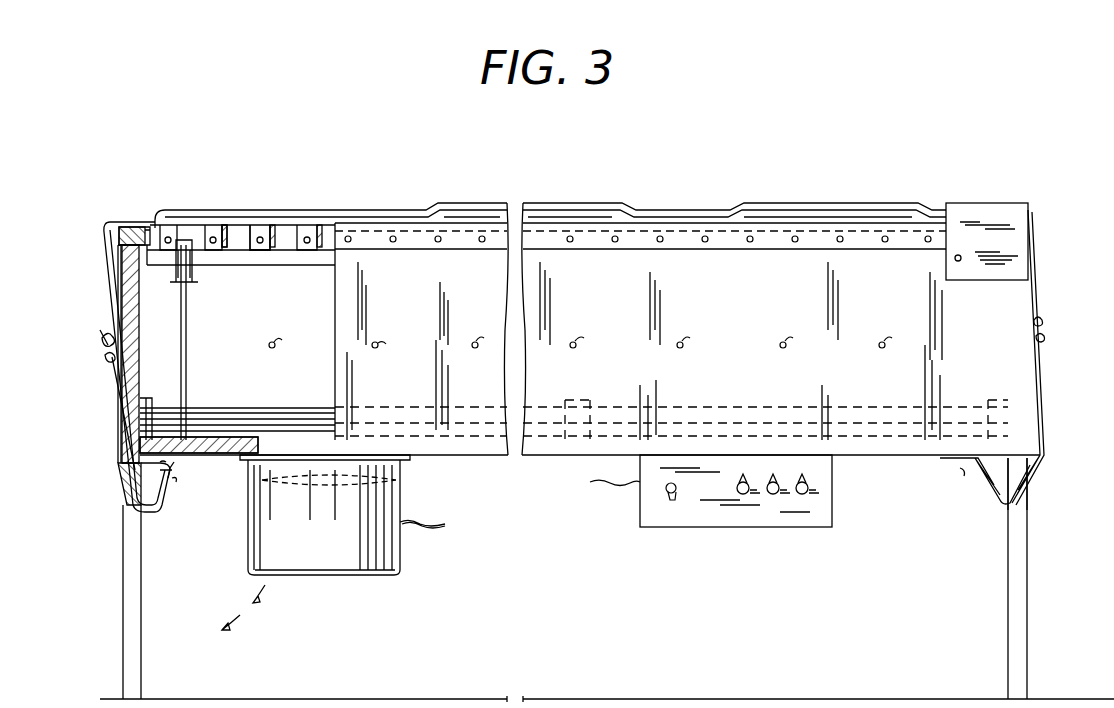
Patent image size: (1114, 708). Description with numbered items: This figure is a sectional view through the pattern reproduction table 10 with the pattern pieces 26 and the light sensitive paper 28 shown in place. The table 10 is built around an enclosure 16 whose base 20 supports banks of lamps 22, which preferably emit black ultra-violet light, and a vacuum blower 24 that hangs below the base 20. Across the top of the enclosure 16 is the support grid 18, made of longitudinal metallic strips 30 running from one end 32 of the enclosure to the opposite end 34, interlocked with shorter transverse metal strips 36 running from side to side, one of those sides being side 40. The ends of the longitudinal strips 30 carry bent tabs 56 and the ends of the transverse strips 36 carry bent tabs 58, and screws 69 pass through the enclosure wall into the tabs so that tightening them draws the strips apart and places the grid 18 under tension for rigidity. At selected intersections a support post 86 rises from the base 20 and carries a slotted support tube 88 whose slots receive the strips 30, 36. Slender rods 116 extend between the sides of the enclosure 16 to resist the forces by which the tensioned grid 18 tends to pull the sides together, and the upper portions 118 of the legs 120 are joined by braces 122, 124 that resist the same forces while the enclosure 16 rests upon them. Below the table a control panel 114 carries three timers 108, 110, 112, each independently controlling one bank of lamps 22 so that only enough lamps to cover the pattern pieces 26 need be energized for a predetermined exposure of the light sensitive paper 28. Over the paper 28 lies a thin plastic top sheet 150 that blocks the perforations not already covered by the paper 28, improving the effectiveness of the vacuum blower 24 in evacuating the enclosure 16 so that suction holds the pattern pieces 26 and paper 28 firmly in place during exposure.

The pattern reproduction table 10 is at (1048, 206).
The enclosure 16 is at (866, 459).
The support grid 18 is at (234, 252).
The base 20 is at (228, 460).
The lamps 22 is at (244, 408).
The vacuum blower 24 is at (402, 553).
The pattern pieces 26 is at (548, 217).
The light sensitive paper 28 is at (464, 212).
The longitudinal metallic strips 30 is at (283, 262).
The end of enclosure 32 is at (126, 372).
The opposite end of enclosure 34 is at (1010, 345).
The transverse metal strips 36 is at (306, 235).
The side of enclosure 40 is at (710, 273).
The bent tabs 56 is at (126, 256).
The bent tabs 58 is at (259, 235).
The screws 69 is at (132, 240).
The support post 86 is at (187, 343).
The slotted support tube 88 is at (192, 278).
The timer 108 is at (743, 496).
The timer 110 is at (774, 496).
The timer 112 is at (804, 496).
The control panel 114 is at (671, 528).
The rods 116 is at (666, 497).
The upper portions of the legs 118 is at (122, 663).
The legs 120 is at (125, 512).
The brace 122 is at (165, 484).
The brace 124 is at (1000, 498).
The top sheet 150 is at (370, 212).